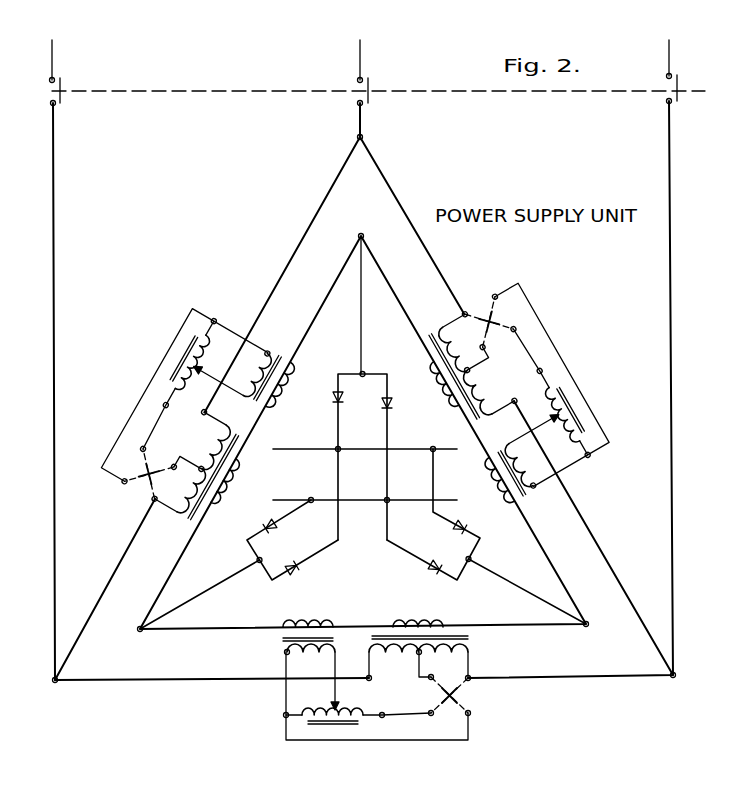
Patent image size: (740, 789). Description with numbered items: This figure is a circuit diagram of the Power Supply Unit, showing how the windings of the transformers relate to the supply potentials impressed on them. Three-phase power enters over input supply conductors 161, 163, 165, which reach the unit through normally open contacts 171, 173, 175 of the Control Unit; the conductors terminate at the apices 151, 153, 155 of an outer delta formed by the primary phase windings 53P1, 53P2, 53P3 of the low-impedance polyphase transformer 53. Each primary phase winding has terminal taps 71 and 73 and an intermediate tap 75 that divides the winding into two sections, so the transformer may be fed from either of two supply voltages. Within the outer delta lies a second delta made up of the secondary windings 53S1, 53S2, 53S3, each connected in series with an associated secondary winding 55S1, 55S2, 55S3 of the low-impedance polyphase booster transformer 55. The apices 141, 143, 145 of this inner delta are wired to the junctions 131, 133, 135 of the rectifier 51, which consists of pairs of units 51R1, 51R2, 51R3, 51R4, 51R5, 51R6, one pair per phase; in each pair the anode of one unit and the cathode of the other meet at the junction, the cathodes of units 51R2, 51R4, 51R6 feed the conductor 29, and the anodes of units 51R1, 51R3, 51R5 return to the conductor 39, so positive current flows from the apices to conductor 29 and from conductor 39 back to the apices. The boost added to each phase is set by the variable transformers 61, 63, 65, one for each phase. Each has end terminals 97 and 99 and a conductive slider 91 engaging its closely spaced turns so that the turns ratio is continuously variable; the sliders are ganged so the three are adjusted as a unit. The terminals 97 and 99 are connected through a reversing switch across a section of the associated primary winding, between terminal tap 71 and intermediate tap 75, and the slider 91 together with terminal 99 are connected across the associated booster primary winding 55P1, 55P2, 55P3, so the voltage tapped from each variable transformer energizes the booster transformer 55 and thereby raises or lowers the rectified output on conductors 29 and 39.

The conductor 29 is at (378, 449).
The conductor 39 is at (391, 500).
The rectifier 51 is at (374, 482).
The rectifier unit 51R1 is at (293, 532).
The rectifier unit 51R2 is at (298, 568).
The rectifier unit 51R3 is at (430, 567).
The rectifier unit 51R4 is at (455, 532).
The rectifier unit 51R5 is at (389, 403).
The rectifier unit 51R6 is at (333, 397).
The polyphase transformer 53 is at (178, 541).
The primary phase winding 53P1 is at (470, 645).
The primary phase winding 53P2 is at (462, 313).
The primary phase winding 53P3 is at (203, 470).
The secondary winding 53S1 is at (413, 615).
The secondary winding 53S2 is at (436, 390).
The secondary winding 53S3 is at (225, 484).
The polyphase booster transformer 55 is at (320, 671).
The booster primary winding 55P1 is at (285, 652).
The booster primary winding 55P2 is at (536, 491).
The booster primary winding 55P3 is at (266, 352).
The booster secondary winding 55S1 is at (299, 627).
The booster secondary winding 55S2 is at (498, 472).
The booster secondary winding 55S3 is at (290, 392).
The variable transformer 61 is at (320, 708).
The variable transformer 63 is at (558, 440).
The variable transformer 65 is at (200, 350).
The terminal tap 71 is at (470, 676).
The terminal tap 73 is at (371, 678).
The intermediate tap 75 is at (421, 654).
The conductive slider 91 is at (337, 705).
The end terminal 97 is at (284, 717).
The end terminal 99 is at (383, 717).
The junction 131 is at (258, 564).
The junction 133 is at (471, 559).
The junction 135 is at (364, 374).
The apex of the delta 141 is at (141, 631).
The apex of the delta 143 is at (588, 626).
The apex of the delta 145 is at (363, 236).
The apex 151 is at (676, 676).
The apex 153 is at (363, 137).
The apex 155 is at (52, 681).
The input supply conductor 161 is at (672, 157).
The input supply conductor 163 is at (360, 121).
The input supply conductor 165 is at (55, 172).
The normally open contact 171 is at (679, 98).
The normally open contact 173 is at (370, 99).
The normally open contact 175 is at (62, 99).